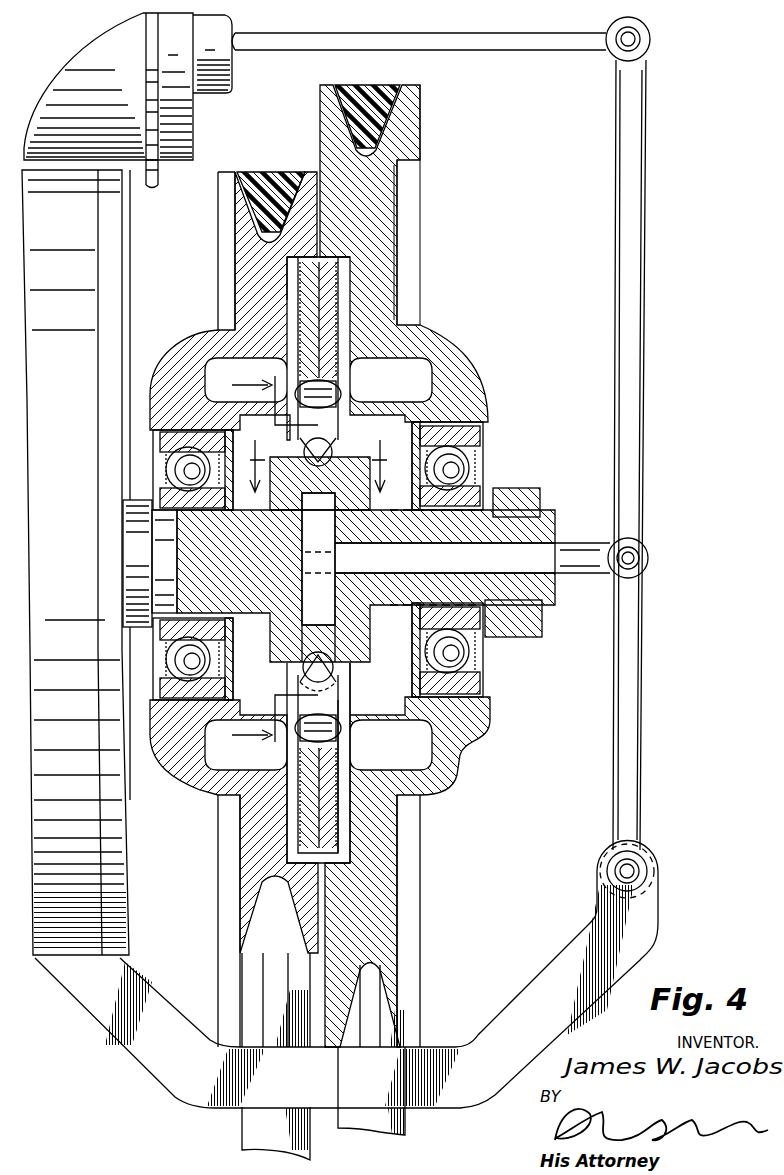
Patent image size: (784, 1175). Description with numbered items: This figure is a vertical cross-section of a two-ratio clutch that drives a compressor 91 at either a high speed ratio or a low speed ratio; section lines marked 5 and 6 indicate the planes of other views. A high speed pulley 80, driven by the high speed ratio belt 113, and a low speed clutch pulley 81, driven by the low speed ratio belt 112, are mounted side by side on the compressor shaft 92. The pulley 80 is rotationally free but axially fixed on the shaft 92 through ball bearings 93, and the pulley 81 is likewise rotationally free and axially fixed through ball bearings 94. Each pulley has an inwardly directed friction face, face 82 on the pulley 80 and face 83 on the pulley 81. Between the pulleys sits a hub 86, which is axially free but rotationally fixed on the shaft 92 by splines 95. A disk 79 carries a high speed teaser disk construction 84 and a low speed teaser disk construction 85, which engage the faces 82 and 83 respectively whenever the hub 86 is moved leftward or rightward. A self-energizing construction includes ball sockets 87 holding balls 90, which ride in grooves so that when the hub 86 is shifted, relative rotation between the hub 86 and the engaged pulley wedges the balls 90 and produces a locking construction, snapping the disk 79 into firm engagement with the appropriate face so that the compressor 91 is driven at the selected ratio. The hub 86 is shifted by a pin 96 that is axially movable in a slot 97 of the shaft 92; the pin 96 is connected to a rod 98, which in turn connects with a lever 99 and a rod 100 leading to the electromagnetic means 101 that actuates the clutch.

The disk 79 is at (330, 365).
The high speed pulley 80 is at (250, 240).
The low speed clutch pulley 81 is at (385, 205).
The friction face 82 is at (285, 293).
The friction face 83 is at (352, 298).
The high speed teaser disk construction 84 is at (300, 815).
The low speed teaser disk construction 85 is at (340, 840).
The hub 86 is at (350, 668).
The ball sockets 87 is at (332, 450).
The balls 90 is at (325, 665).
The compressor 91 is at (100, 880).
The compressor shaft 92 is at (540, 597).
The ball bearings 93 is at (183, 462).
The ball bearings 94 is at (460, 470).
The splines 95 is at (352, 652).
The pin 96 is at (305, 580).
The slot 97 is at (290, 543).
The rod 98 is at (565, 545).
The lever 99 is at (648, 420).
The rod 100 is at (470, 60).
The electromagnetic means 101 is at (50, 95).
The low speed ratio belt 112 is at (343, 90).
The high speed ratio belt 113 is at (268, 175).
The section line 5 is at (275, 560).
The section line 6 is at (317, 453).